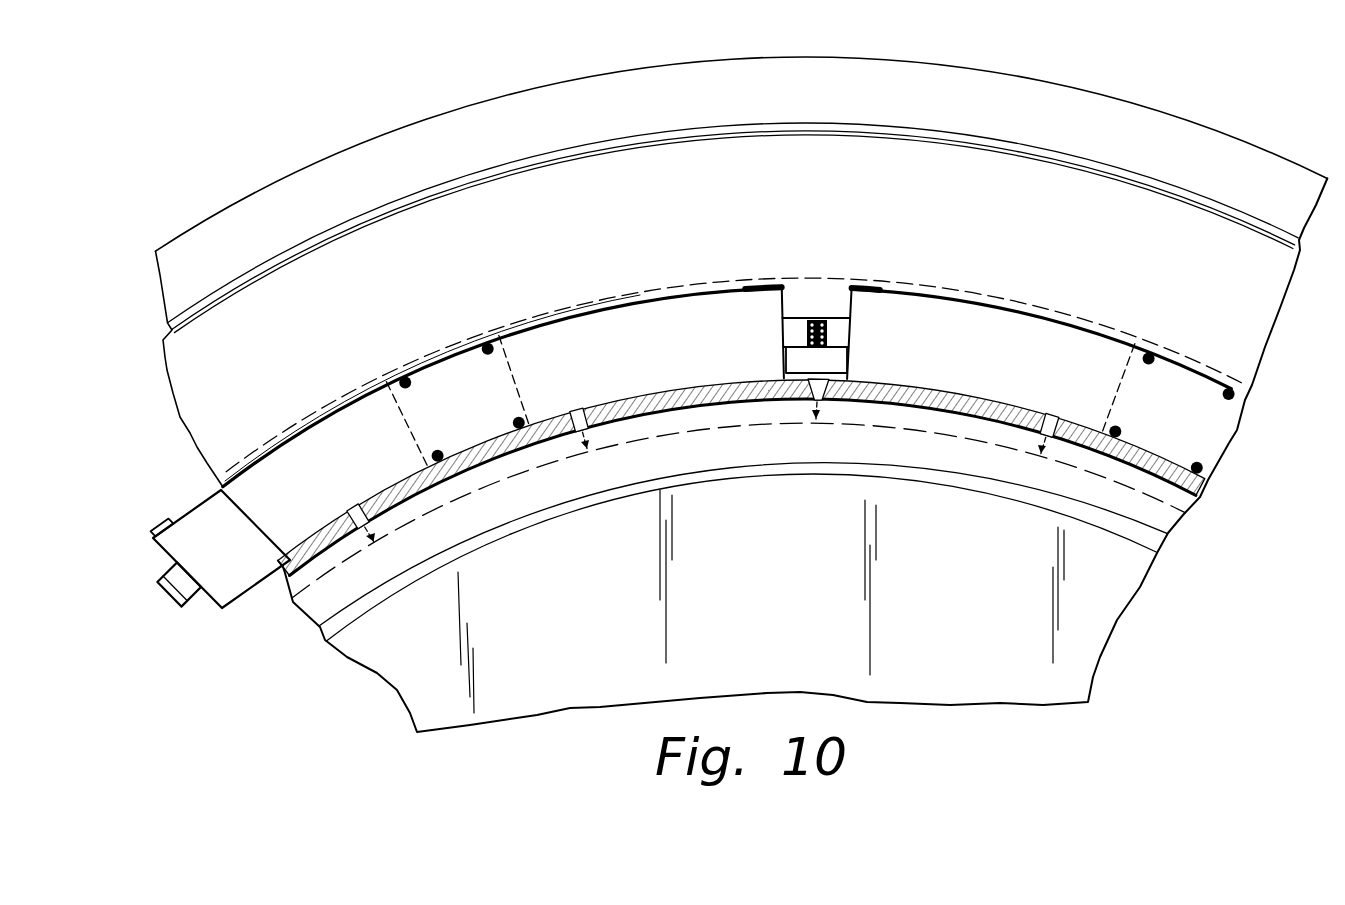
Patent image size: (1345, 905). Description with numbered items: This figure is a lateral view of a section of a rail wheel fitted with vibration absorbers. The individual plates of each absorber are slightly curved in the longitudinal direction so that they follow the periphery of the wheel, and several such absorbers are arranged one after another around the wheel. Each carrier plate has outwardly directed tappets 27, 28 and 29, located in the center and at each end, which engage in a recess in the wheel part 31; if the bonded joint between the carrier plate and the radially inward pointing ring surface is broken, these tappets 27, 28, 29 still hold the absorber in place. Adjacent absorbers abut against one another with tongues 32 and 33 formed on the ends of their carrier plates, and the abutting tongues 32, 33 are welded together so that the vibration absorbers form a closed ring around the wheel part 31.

The tappet 27 is at (163, 530).
The tappet 28 is at (432, 356).
The tappet 29 is at (762, 283).
The wheel part 31 is at (1235, 378).
The tongue 32 is at (810, 320).
The tongue 33 is at (823, 320).